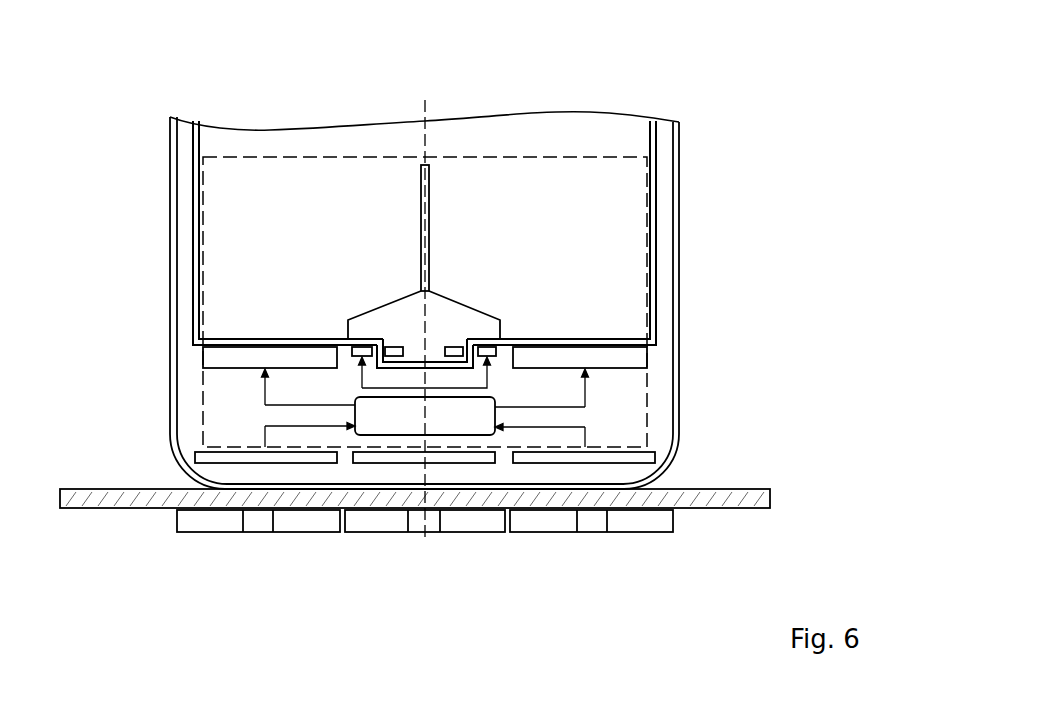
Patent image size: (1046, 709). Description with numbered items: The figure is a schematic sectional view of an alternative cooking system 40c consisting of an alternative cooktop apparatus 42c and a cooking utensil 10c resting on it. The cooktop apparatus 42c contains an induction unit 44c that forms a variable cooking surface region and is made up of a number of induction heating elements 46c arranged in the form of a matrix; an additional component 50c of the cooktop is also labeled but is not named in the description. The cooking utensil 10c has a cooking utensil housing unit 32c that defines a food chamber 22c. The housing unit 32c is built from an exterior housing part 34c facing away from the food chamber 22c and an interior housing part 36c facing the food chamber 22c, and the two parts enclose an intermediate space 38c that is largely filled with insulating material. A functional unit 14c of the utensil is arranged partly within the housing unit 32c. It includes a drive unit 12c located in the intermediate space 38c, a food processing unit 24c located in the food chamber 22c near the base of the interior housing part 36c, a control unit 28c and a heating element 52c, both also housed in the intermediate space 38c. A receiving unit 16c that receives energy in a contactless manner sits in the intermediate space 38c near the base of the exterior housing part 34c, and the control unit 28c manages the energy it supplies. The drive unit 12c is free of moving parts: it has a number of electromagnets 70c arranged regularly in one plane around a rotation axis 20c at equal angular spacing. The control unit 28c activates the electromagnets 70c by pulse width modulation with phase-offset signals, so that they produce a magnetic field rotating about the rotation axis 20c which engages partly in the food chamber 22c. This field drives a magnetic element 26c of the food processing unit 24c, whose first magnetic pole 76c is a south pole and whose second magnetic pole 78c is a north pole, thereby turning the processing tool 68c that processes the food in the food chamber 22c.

The cooking utensil 10c is at (720, 167).
The drive unit 12c is at (507, 354).
The functional unit 14c is at (305, 157).
The receiving unit 16c is at (658, 452).
The rotation axis 20c is at (427, 112).
The food chamber 22c is at (292, 261).
The food processing unit 24c is at (489, 266).
The magnetic element 26c is at (437, 350).
The control unit 28c is at (473, 410).
The cooking utensil housing unit 32c is at (688, 213).
The exterior housing part 34c is at (680, 272).
The interior housing part 36c is at (656, 140).
The intermediate space 38c is at (258, 426).
The cooking system 40c is at (764, 116).
The cooktop apparatus 42c is at (782, 456).
The induction unit 44c is at (182, 520).
The induction heating elements 46c is at (212, 517).
The hob plate 50c is at (93, 500).
The heating element 52c is at (230, 355).
The processing tool 68c is at (490, 346).
The electromagnets 70c is at (492, 364).
The first magnetic pole 76c is at (394, 346).
The second magnetic pole 78c is at (457, 346).